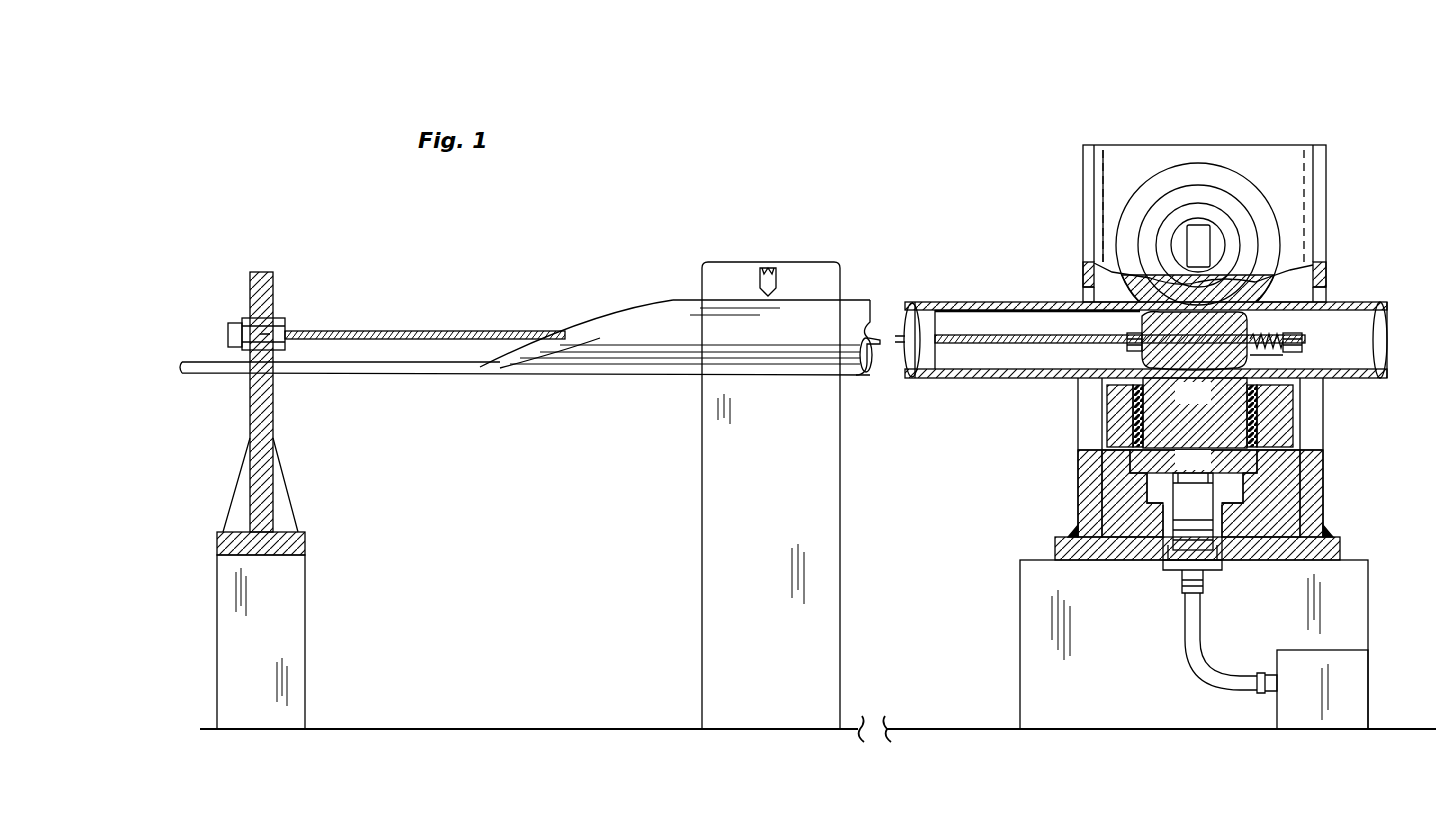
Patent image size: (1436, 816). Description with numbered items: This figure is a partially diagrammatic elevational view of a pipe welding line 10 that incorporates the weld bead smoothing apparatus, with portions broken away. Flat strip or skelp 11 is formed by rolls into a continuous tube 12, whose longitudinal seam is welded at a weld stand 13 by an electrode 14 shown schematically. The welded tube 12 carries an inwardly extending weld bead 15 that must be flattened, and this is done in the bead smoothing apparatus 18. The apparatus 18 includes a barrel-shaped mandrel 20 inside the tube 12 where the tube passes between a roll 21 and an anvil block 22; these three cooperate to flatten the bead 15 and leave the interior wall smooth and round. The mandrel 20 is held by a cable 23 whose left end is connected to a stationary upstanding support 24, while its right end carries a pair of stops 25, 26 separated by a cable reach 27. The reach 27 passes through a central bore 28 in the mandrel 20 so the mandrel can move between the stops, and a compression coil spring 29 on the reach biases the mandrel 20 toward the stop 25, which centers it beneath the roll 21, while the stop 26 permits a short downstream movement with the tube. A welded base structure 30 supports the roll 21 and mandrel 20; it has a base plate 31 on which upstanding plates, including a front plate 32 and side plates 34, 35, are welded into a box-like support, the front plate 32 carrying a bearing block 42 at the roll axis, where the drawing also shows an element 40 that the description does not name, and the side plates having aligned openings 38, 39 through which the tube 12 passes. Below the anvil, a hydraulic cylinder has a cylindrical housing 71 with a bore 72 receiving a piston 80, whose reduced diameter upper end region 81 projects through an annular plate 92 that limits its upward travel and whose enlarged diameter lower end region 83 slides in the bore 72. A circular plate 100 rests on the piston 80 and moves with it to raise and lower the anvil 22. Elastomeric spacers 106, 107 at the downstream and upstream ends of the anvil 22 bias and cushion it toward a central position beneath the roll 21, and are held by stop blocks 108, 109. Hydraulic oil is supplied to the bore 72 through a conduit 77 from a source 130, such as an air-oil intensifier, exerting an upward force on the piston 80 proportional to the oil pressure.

The pipe welding line 10 is at (745, 168).
The flat strip or skelp 11 is at (362, 366).
The tube 12 is at (683, 300).
The weld stand 13 is at (747, 272).
The electrode 14 is at (779, 284).
The weld bead 15 is at (975, 318).
The bead smoothing apparatus 18 is at (1046, 233).
The barrel-shaped mandrel 20 is at (1142, 292).
The roll 21 is at (1258, 280).
The anvil block 22 is at (1205, 406).
The cable 23 is at (422, 340).
The stationary upstanding support 24 is at (284, 492).
The stop 25 is at (1140, 316).
The stop 26 is at (1300, 345).
The cable reach 27 is at (1150, 366).
The bore 28 is at (1244, 292).
The compression coil spring 29 is at (1280, 354).
The welded base structure 30 is at (1328, 492).
The base plate 31 is at (1332, 556).
The front plate 32 is at (1167, 156).
The side plate 34 is at (1083, 160).
The side plate 35 is at (1327, 172).
The opening 38 is at (1092, 436).
The opening 39 is at (1318, 448).
The slot 40 is at (1213, 238).
The bearing block 42 is at (1233, 190).
The cylindrical housing 71 is at (1175, 570).
The bore 72 is at (1210, 535).
The hydraulic conduit 77 is at (1201, 642).
The piston 80 is at (1177, 515).
The reduced diameter upper end region 81 is at (1162, 497).
The enlarged diameter lower end region 83 is at (1193, 511).
The annular plate 92 is at (1230, 486).
The circular plate 100 is at (1193, 461).
The elastomeric spacer 106 is at (1247, 428).
The elastomeric spacer 107 is at (1143, 428).
The stop block 108 is at (1287, 413).
The stop block 109 is at (1120, 417).
The source 130 is at (1342, 682).